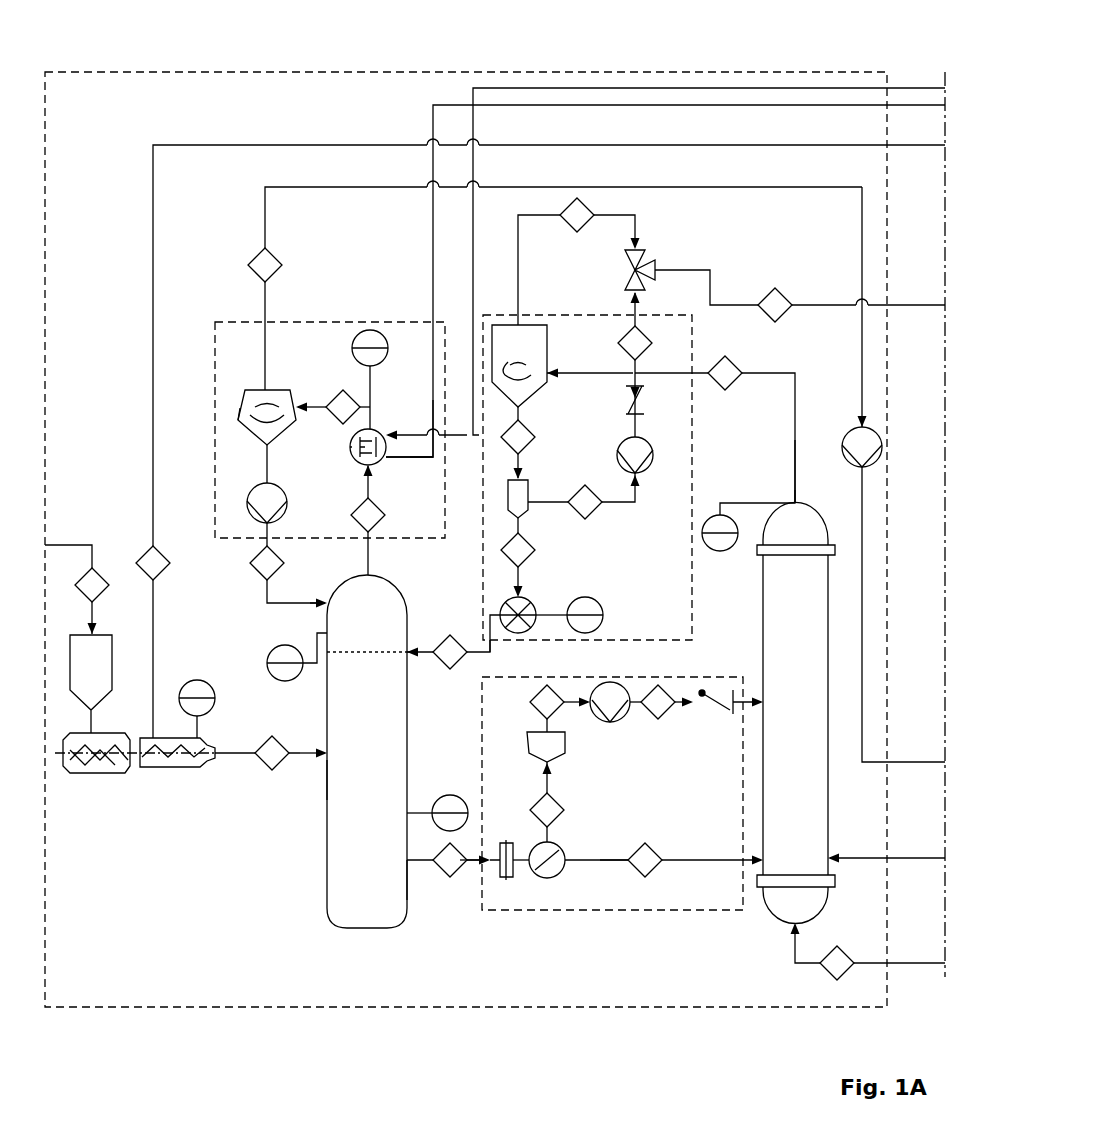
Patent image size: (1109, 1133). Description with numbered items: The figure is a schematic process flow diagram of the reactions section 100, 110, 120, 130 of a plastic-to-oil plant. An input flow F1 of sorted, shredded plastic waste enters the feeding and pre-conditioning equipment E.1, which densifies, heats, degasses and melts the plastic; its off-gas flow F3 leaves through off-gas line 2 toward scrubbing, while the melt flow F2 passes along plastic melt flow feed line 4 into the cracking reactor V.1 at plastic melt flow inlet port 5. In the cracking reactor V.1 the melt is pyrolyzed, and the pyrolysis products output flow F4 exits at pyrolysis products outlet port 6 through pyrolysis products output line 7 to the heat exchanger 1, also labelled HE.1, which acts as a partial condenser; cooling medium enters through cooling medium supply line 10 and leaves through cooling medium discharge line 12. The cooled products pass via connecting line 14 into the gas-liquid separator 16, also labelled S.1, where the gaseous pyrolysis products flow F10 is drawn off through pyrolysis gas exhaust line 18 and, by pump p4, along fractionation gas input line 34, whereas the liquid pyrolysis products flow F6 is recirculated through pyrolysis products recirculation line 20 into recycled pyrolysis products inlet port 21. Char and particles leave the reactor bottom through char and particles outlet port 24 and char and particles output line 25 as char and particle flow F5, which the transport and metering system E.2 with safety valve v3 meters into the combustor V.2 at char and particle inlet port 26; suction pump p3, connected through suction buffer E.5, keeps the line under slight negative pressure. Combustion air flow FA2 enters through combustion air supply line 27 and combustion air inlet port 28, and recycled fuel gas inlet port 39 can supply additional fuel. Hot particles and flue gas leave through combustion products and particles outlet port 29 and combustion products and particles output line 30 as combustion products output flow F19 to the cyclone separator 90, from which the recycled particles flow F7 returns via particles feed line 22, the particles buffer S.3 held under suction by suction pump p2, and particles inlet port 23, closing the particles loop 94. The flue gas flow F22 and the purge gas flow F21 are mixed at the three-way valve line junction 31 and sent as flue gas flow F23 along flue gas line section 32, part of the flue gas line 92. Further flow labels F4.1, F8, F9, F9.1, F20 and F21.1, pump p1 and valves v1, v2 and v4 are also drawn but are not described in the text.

The reactions section 100 is at (685, 72).
The off-gas line 2 is at (153, 445).
The reactions section 130 is at (215, 322).
The pyrolysis gas exhaust line 18 is at (267, 300).
The fractionation gas input line 34 is at (345, 188).
The connecting line 14 is at (312, 405).
The gas-liquid separator 16 is at (238, 410).
The heat exchanger 1 is at (350, 447).
The cooling medium supply line 10 is at (424, 456).
The cooling medium discharge line 12 is at (432, 462).
The pyrolysis products recirculation line 20 is at (262, 588).
The pyrolysis products output line 7 is at (375, 548).
The pyrolysis products outlet port 6 is at (375, 572).
The recycled pyrolysis products inlet port 21 is at (327, 608).
The plastic melt flow feed line 4 is at (305, 760).
The plastic melt flow inlet port 5 is at (327, 780).
The particles feed line 22 is at (412, 660).
The particles inlet port 23 is at (413, 660).
The particles loop 94 is at (480, 648).
The char and particles outlet port 24 is at (410, 880).
The char and particles output line 25 is at (478, 880).
The reactions section 110 is at (650, 910).
The char and particle inlet port 26 is at (757, 863).
The recycled fuel gas inlet port 39 is at (832, 858).
The combustion air inlet port 28 is at (790, 940).
The combustion air supply line 27 is at (920, 965).
The combustion products and particles outlet port 29 is at (796, 503).
The combustion products and particles output line 30 is at (795, 455).
The flue gas line section 32 is at (712, 290).
The flue gas line 92 is at (815, 305).
The line junction 31 is at (650, 262).
The reactions section 120 is at (540, 315).
The fluid/particles separator 90 is at (500, 325).
The input flow of plastic waste F1 is at (105, 570).
The melt flow F2 is at (262, 768).
The off-gas flow F3 is at (165, 572).
The pyrolysis products output flow F4 is at (385, 515).
The filter F4.1 is at (350, 398).
The char and particle flow F5 is at (445, 878).
The liquid pyrolysis products flow F6 is at (283, 560).
The recycled particles flow F7 is at (455, 635).
The filter F8 is at (660, 845).
The filter F9 is at (535, 715).
The filter F9.1 is at (668, 720).
The gaseous pyrolysis products flow F10 is at (255, 258).
The combustion products output flow F19 is at (738, 392).
The filter F20 is at (535, 428).
The purge gas flow F21 is at (598, 517).
The filter F21.1 is at (655, 348).
The flue gas flow F22 is at (592, 208).
The flue gas flow F23 is at (788, 296).
The combustion air flow FA2 is at (833, 980).
The pump p1 is at (287, 505).
The suction pump p2 is at (652, 470).
The suction pump p3 is at (614, 722).
The pump p4 is at (848, 432).
The valve v1 is at (533, 600).
The valve v2 is at (620, 405).
The safety valve v3 is at (507, 880).
The valve v4 is at (718, 697).
The gas-liquid separator S.1 is at (267, 417).
The particles buffer S.3 is at (530, 488).
The heat exchanger HE.1 is at (327, 454).
The feeding and pre-conditioning equipment E.1 is at (110, 775).
The transport and metering system E.2 is at (547, 880).
The suction buffer E.5 is at (538, 762).
The cracking reactor V.1 is at (367, 751).
The combustor V.2 is at (796, 712).